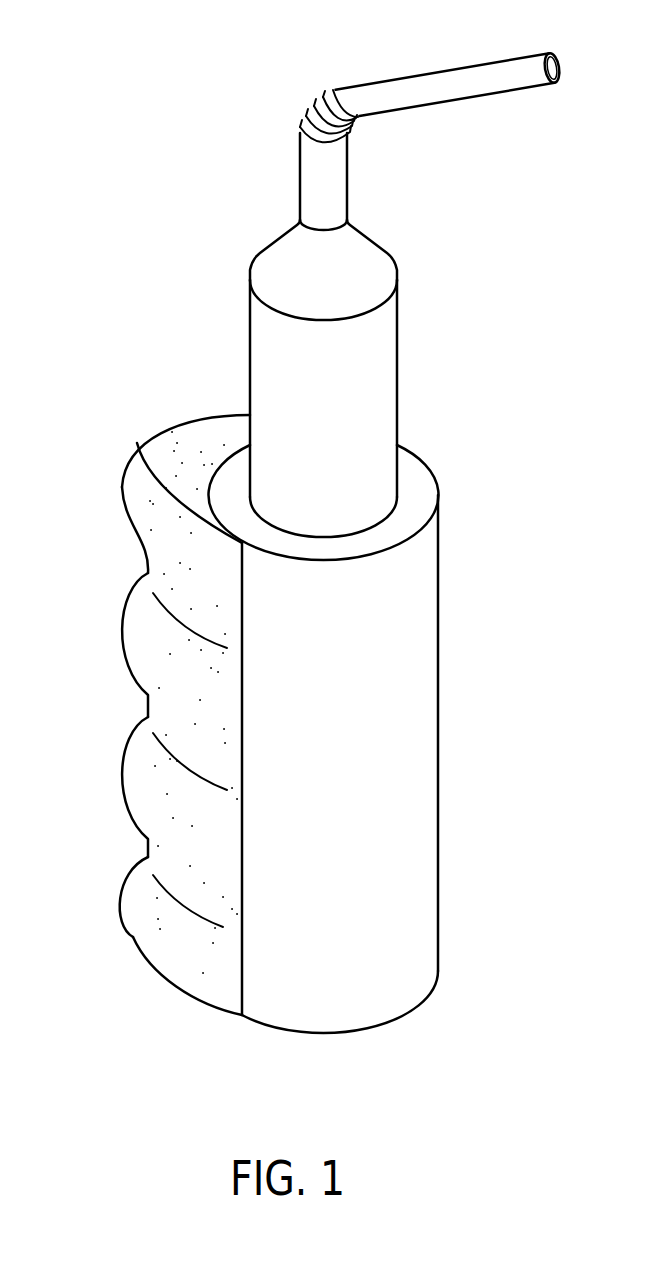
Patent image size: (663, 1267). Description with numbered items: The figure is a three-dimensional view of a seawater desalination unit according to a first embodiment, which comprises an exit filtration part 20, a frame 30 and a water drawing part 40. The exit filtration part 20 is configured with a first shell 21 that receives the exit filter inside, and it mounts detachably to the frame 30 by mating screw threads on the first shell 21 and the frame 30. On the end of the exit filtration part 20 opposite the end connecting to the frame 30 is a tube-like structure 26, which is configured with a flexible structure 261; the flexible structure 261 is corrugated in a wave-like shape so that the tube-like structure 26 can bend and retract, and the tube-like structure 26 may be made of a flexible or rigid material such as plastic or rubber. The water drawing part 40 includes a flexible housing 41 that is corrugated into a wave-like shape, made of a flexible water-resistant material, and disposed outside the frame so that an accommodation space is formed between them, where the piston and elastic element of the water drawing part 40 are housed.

The exit filtration part 20 is at (232, 331).
The first shell 21 is at (380, 380).
The tube-like structure 26 is at (440, 77).
The flexible structure 261 is at (313, 107).
The frame 30 is at (453, 758).
The water drawing part 40 is at (95, 715).
The flexible housing 41 is at (128, 617).